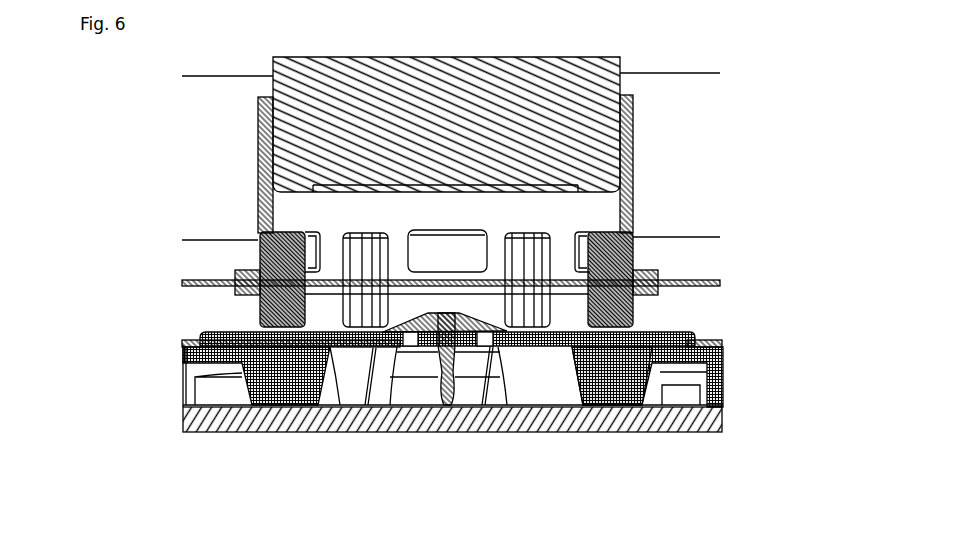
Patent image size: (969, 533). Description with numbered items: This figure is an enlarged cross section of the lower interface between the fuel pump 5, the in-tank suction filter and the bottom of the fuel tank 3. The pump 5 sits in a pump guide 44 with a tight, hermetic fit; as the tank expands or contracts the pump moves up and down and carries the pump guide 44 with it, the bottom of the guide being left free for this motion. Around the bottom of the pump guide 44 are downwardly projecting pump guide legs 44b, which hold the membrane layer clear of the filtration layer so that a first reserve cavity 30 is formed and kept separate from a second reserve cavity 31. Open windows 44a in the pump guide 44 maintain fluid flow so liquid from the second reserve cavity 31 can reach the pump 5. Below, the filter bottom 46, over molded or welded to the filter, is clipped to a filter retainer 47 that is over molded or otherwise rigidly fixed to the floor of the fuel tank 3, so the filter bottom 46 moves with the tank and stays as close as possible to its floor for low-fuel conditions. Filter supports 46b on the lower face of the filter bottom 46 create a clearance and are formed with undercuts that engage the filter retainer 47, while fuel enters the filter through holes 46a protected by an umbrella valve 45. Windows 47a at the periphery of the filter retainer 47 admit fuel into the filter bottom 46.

The fuel tank 3 is at (325, 413).
The pump 5 is at (372, 117).
The first reserve cavity 30 is at (688, 319).
The second reserve cavity 31 is at (190, 166).
The pump guide 44 is at (360, 215).
The open windows 44a is at (447, 243).
The pump guide legs 44b is at (637, 305).
The umbrella valve 45 is at (240, 376).
The filter bottom 46 is at (213, 330).
The holes 46a is at (490, 333).
The filter supports 46b is at (607, 370).
The filter retainer 47 is at (720, 337).
The windows 47a is at (663, 385).